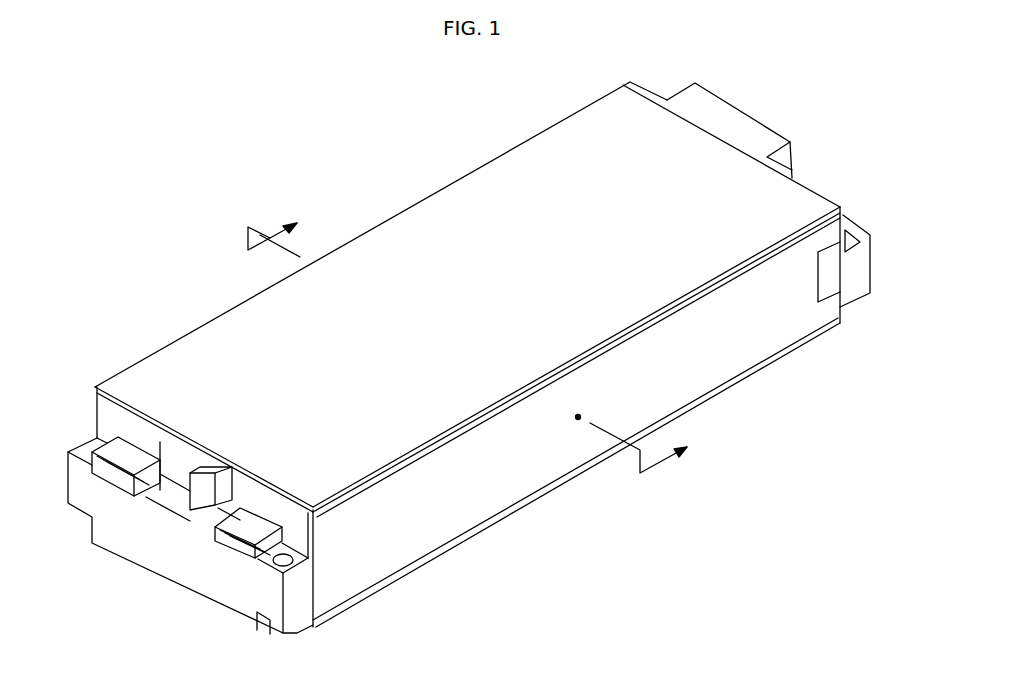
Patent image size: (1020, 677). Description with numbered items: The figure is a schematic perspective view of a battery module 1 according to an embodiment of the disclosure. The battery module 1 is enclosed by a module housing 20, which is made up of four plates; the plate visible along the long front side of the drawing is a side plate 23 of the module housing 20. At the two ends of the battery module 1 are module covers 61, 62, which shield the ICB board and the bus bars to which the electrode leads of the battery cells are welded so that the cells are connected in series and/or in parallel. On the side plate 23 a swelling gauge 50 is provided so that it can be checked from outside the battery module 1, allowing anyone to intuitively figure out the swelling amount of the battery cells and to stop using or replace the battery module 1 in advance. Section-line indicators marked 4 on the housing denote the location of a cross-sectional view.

The battery module 1 is at (474, 355).
The module housing 20 is at (432, 200).
The side plate 23 is at (483, 497).
The swelling gauge 50 is at (577, 422).
The module cover 61 is at (200, 578).
The module cover 62 is at (826, 193).
The section line 4 is at (483, 338).